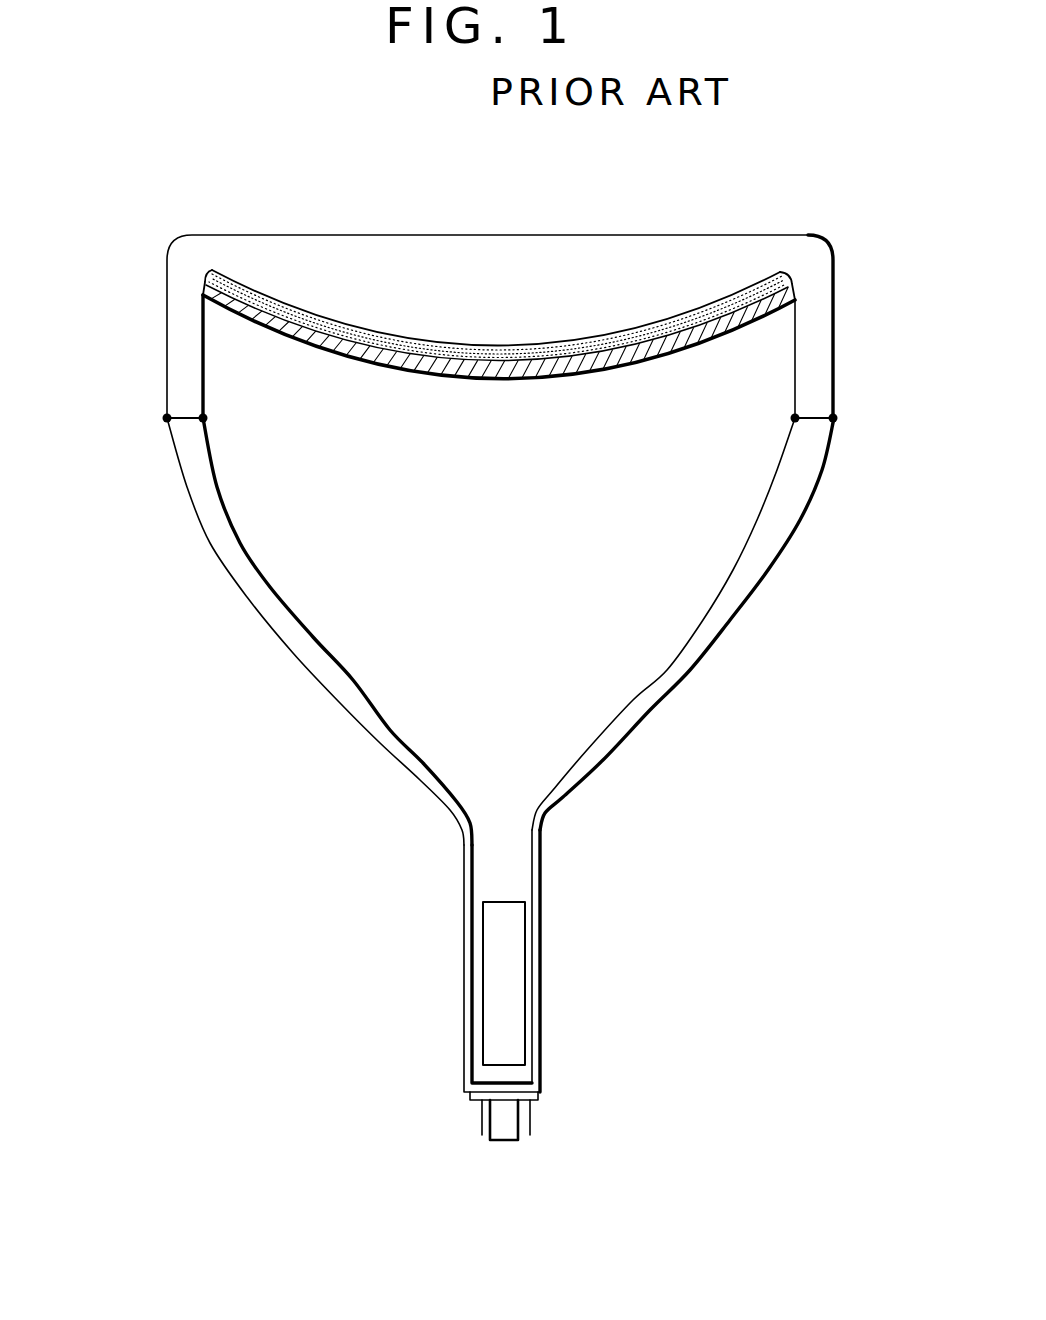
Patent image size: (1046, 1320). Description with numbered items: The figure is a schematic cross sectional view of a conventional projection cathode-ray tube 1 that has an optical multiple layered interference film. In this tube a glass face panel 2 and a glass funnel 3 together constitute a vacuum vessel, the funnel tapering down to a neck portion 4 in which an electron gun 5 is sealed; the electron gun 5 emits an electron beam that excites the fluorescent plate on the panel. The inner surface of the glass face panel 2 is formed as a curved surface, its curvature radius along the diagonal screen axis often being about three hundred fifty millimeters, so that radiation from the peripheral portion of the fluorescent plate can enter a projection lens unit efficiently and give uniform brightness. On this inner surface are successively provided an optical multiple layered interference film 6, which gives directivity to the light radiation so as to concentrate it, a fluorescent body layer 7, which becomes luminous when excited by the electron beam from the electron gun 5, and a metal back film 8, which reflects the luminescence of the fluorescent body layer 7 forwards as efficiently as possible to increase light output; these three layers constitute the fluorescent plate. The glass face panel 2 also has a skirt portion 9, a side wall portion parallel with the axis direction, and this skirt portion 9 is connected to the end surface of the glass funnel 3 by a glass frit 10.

The projection cathode-ray tube 1 is at (176, 494).
The glass face panel 2 is at (718, 256).
The glass funnel 3 is at (707, 630).
The neck portion 4 is at (533, 887).
The electron gun 5 is at (510, 990).
The optical multiple layered interference film 6 is at (520, 347).
The fluorescent body layer 7 is at (560, 382).
The metal back film 8 is at (433, 375).
The skirt portion 9 is at (820, 352).
The glass frit 10 is at (842, 420).